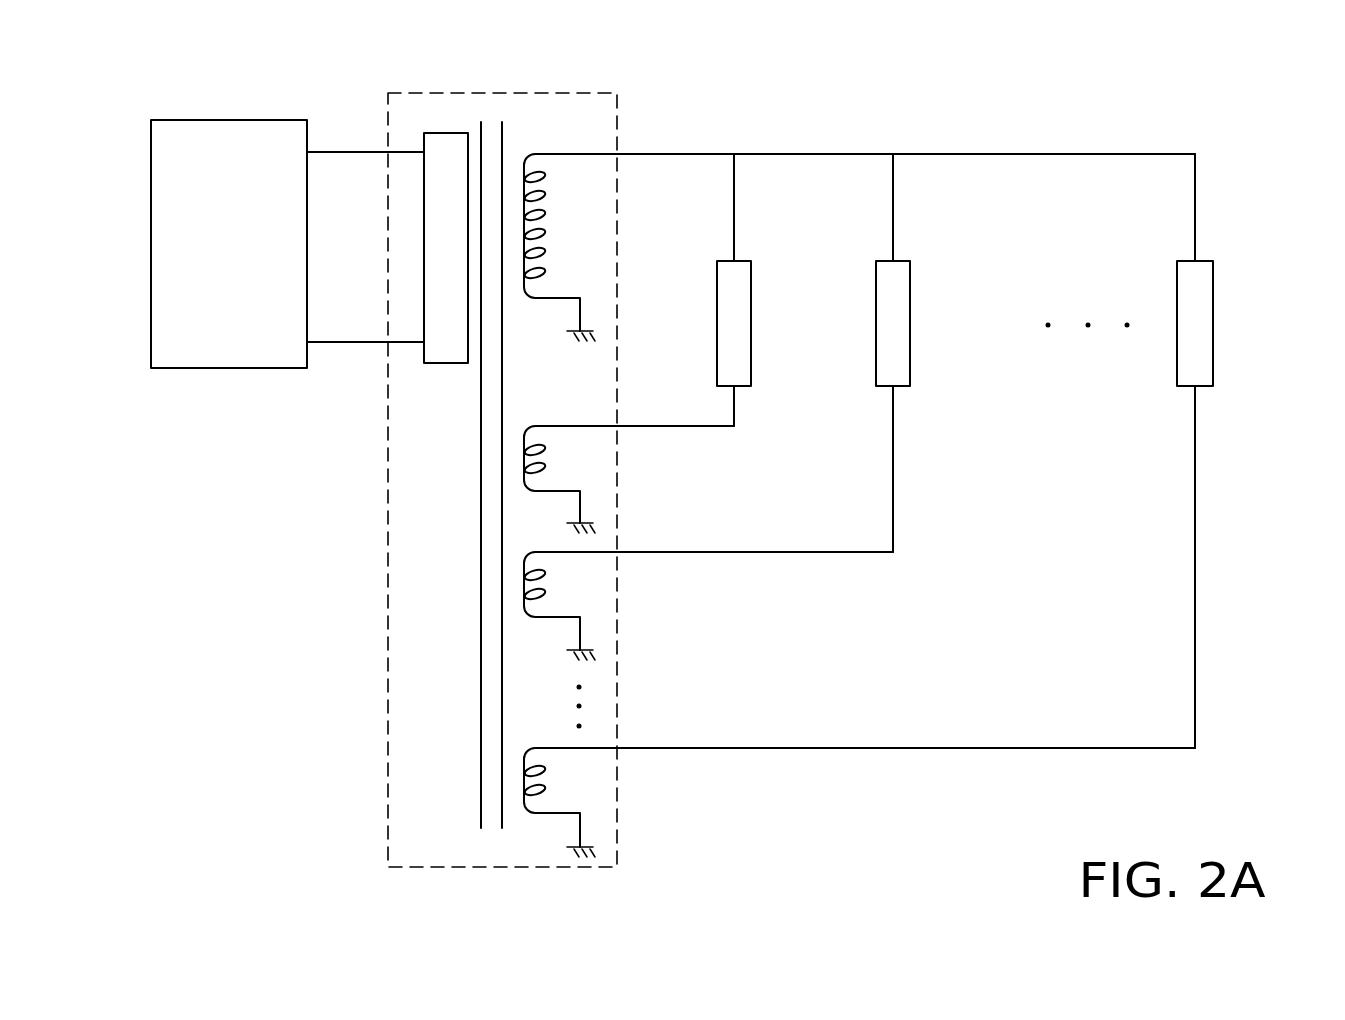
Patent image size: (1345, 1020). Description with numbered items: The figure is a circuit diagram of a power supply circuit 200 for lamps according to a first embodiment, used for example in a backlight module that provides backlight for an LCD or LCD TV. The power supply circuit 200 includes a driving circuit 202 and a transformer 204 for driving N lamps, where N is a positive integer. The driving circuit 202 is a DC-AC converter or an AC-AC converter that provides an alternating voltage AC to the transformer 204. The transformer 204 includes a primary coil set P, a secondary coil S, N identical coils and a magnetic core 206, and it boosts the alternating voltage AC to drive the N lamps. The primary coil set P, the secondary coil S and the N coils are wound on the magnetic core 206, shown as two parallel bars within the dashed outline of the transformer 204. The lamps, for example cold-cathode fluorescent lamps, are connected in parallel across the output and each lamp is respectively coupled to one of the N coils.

The power supply circuit 200 is at (736, 442).
The driving circuit 202 is at (228, 119).
The transformer 204 is at (502, 92).
The magnetic core 206 is at (480, 676).
The primary coil set P is at (445, 364).
The secondary coil S is at (859, 247).
The alternative voltage AC is at (365, 229).